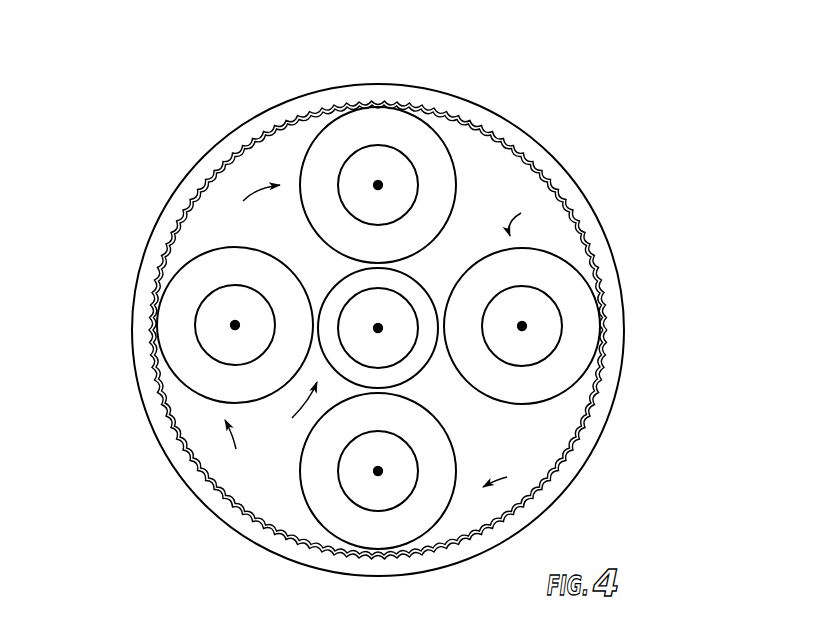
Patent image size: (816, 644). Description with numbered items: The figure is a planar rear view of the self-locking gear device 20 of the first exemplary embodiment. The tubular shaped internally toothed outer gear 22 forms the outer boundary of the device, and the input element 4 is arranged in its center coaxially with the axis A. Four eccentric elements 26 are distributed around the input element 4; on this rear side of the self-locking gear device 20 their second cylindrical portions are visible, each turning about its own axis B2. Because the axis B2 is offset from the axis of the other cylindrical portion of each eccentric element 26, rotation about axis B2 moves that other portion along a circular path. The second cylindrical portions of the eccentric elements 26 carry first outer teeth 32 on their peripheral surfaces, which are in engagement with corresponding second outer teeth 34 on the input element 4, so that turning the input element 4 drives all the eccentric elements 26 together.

The self-locking gear device 20 is at (595, 122).
The internally toothed outer gear 22 is at (470, 106).
The input element 4 is at (393, 310).
The axis A is at (375, 328).
The eccentric element 26 is at (398, 191).
The axis of the second cylindrical portion B2 is at (378, 183).
The first outer teeth 32 is at (378, 336).
The second outer teeth 34 is at (290, 409).